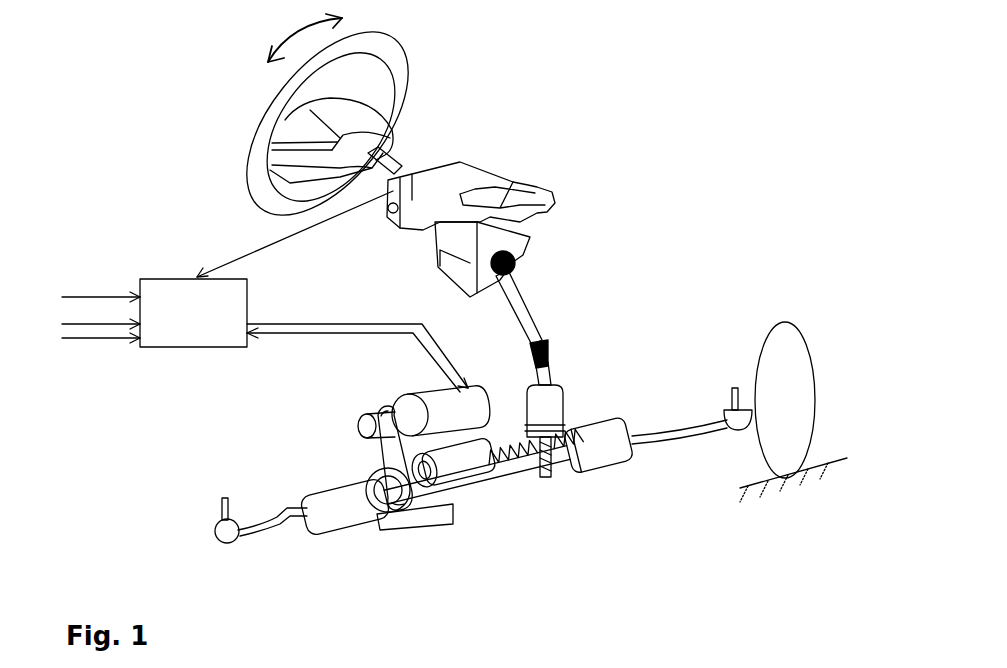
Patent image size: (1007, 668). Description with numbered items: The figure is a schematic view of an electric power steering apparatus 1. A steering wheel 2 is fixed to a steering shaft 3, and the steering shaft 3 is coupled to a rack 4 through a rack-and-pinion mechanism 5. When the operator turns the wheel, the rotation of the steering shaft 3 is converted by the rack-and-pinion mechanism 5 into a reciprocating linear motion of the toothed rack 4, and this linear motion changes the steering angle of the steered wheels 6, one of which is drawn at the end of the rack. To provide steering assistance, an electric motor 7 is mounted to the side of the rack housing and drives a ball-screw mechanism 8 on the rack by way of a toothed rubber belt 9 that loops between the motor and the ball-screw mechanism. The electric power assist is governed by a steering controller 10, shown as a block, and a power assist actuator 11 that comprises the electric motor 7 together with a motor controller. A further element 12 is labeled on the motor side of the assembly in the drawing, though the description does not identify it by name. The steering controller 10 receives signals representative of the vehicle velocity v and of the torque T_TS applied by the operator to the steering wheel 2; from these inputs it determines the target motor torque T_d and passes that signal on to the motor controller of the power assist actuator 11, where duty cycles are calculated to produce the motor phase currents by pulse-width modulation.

The electric power steering apparatus 1 is at (612, 155).
The steering wheel 2 is at (385, 48).
The steering shaft 3 is at (390, 157).
The rack 4 is at (518, 460).
The rack-and-pinion mechanism 5 is at (570, 392).
The steered wheels 6 is at (788, 348).
The electric motor 7 is at (423, 392).
The ball-screw mechanism 8 is at (370, 470).
The toothed rubber belt 9 is at (405, 512).
The steering controller 10 is at (176, 325).
The power assist actuator 11 is at (365, 405).
The electric motor 12 is at (470, 400).